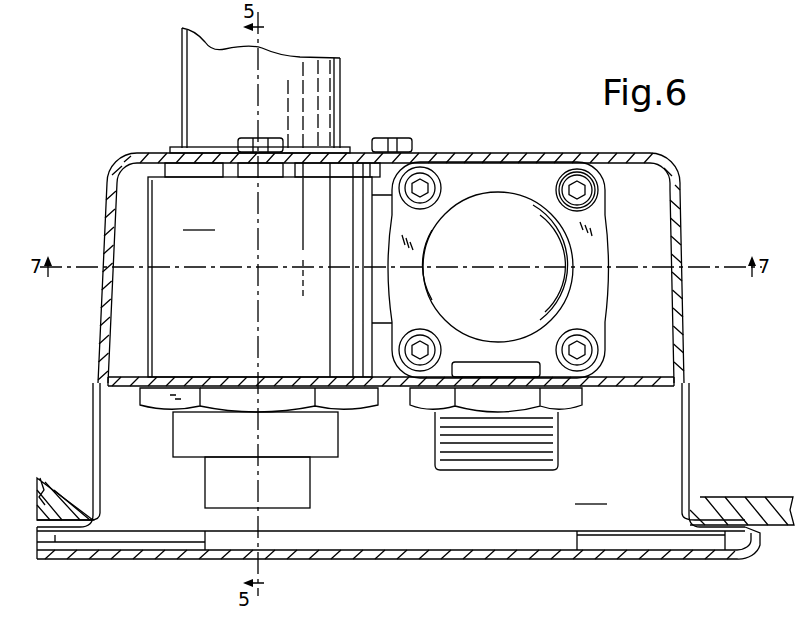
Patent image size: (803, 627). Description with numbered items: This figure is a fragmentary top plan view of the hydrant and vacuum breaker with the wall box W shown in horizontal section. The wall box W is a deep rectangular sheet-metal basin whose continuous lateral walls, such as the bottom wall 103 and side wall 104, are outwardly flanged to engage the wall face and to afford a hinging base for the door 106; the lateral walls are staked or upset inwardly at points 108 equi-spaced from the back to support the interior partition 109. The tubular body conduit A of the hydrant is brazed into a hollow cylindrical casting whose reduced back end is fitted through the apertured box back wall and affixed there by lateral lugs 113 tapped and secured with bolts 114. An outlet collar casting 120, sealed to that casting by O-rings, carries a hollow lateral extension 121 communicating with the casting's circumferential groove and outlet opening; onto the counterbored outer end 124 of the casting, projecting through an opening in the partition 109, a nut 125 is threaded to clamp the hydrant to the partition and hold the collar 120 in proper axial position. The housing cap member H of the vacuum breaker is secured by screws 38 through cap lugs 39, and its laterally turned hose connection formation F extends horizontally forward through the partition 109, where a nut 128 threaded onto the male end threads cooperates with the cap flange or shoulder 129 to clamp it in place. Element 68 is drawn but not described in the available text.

The wall box W is at (109, 156).
The tubular body conduit A is at (348, 86).
The housing cap member H is at (468, 186).
The hose connection formation F is at (557, 328).
The screws 38 is at (597, 189).
The cap lugs 39 is at (596, 200).
The valve block 68 is at (168, 437).
The lateral wall 103 is at (684, 455).
The lateral wall 104 is at (96, 402).
The door 106 is at (575, 560).
The staked points 108 is at (98, 360).
The interior partition 109 is at (125, 392).
The lateral lugs 113 is at (256, 175).
The bolts 114 is at (246, 138).
The outlet collar casting 120 is at (260, 277).
The hollow lateral extension 121 is at (376, 280).
The counterbored outer end 124 is at (290, 395).
The nut 125 is at (186, 395).
The nut 128 is at (585, 403).
The cap flange or shoulder 129 is at (456, 365).